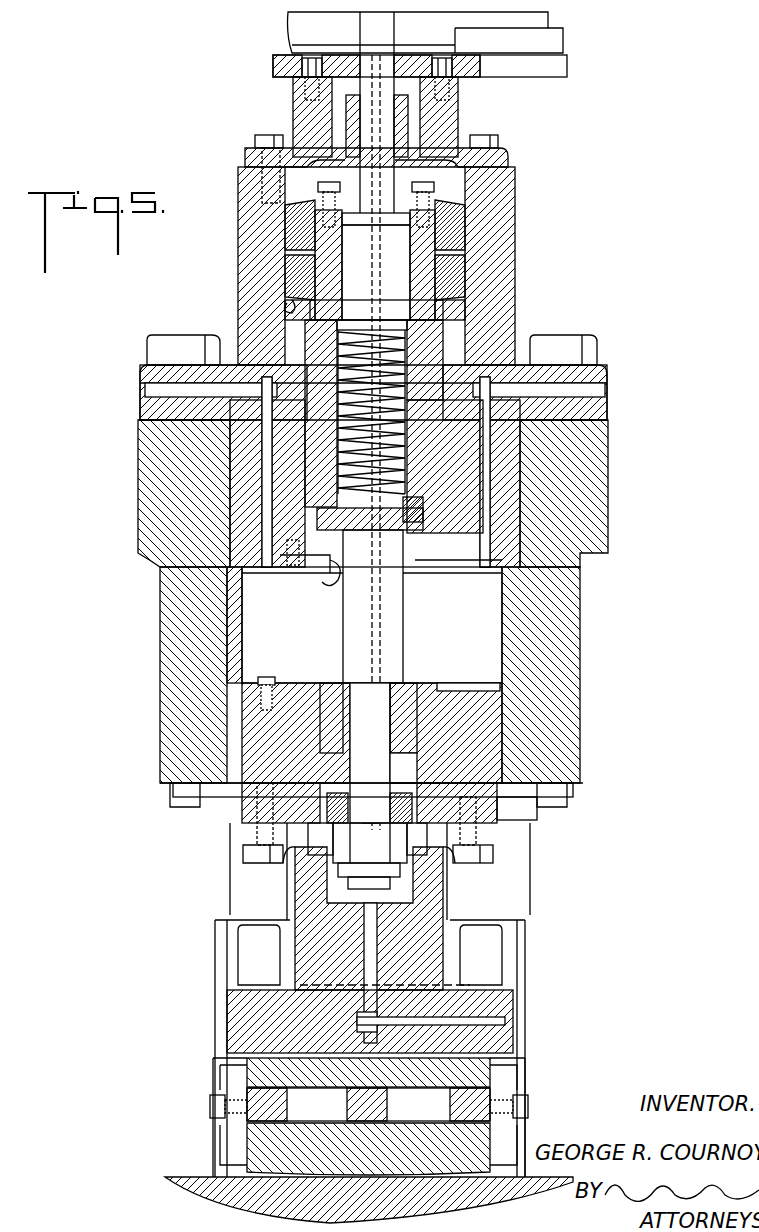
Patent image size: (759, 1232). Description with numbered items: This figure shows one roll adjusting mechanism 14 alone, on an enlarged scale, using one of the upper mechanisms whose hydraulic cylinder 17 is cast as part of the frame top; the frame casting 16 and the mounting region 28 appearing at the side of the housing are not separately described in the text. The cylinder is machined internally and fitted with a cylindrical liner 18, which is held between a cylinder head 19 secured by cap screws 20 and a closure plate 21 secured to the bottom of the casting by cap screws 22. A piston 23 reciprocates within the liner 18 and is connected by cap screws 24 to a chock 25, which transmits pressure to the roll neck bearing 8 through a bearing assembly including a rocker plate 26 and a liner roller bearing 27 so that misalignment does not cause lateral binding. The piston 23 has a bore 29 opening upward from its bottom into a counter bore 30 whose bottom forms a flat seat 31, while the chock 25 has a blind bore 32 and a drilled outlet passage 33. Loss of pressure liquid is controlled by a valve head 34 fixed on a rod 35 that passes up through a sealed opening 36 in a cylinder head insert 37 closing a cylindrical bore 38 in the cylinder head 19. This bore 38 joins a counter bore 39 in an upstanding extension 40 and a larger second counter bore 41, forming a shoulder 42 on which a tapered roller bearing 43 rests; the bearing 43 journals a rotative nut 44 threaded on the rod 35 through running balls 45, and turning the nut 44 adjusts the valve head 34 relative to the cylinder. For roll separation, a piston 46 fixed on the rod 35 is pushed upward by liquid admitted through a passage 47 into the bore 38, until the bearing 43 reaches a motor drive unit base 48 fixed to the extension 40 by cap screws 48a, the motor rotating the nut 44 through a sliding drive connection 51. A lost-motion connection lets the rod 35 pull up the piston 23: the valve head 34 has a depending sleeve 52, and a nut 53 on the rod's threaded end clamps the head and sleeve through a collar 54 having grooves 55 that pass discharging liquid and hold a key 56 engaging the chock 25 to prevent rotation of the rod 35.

The roll neck bearing 8 is at (213, 1200).
The roll adjusting mechanism 14 is at (222, 304).
The housing 16 is at (140, 475).
The hydraulic cylinder 17 is at (224, 622).
The cylindrical liner 18 is at (518, 632).
The cylinder head 19 is at (240, 438).
The cap screws 20 is at (210, 345).
The closure plate 21 is at (560, 797).
The cap screws 22 is at (540, 808).
The piston 23 is at (490, 722).
The cap screws 24 is at (480, 855).
The chock 25 is at (450, 975).
The rocker plate 26 is at (478, 1148).
The liner roller bearing 27 is at (212, 1107).
The dowel pin 28 is at (146, 392).
The bore 29 is at (330, 767).
The counter bore 30 is at (300, 690).
The flat seat 31 is at (417, 746).
The blind bore 32 is at (440, 884).
The outlet passage 33 is at (378, 955).
The valve head 34 is at (408, 690).
The rod 35 is at (382, 605).
The sealed opening 36 is at (340, 527).
The cylinder head insert 37 is at (330, 576).
The cylindrical bore 38 is at (430, 444).
The counter bore 39 is at (290, 302).
The upstanding extension 40 is at (505, 205).
The second counter bore 41 is at (298, 232).
The shoulder 42 is at (452, 272).
The tapered roller bearing 43 is at (452, 238).
The rotative nut 44 is at (335, 280).
The running balls 45 is at (408, 378).
The piston 46 is at (420, 505).
The passage 47 is at (522, 472).
The motor drive unit base 48 is at (448, 115).
The cap screws 48a is at (545, 139).
The sliding drive connection 51 is at (350, 120).
The depending sleeve 52 is at (400, 770).
The nut 53 is at (367, 858).
The collar 54 is at (413, 818).
The grooves 55 is at (330, 808).
The key 56 is at (330, 822).